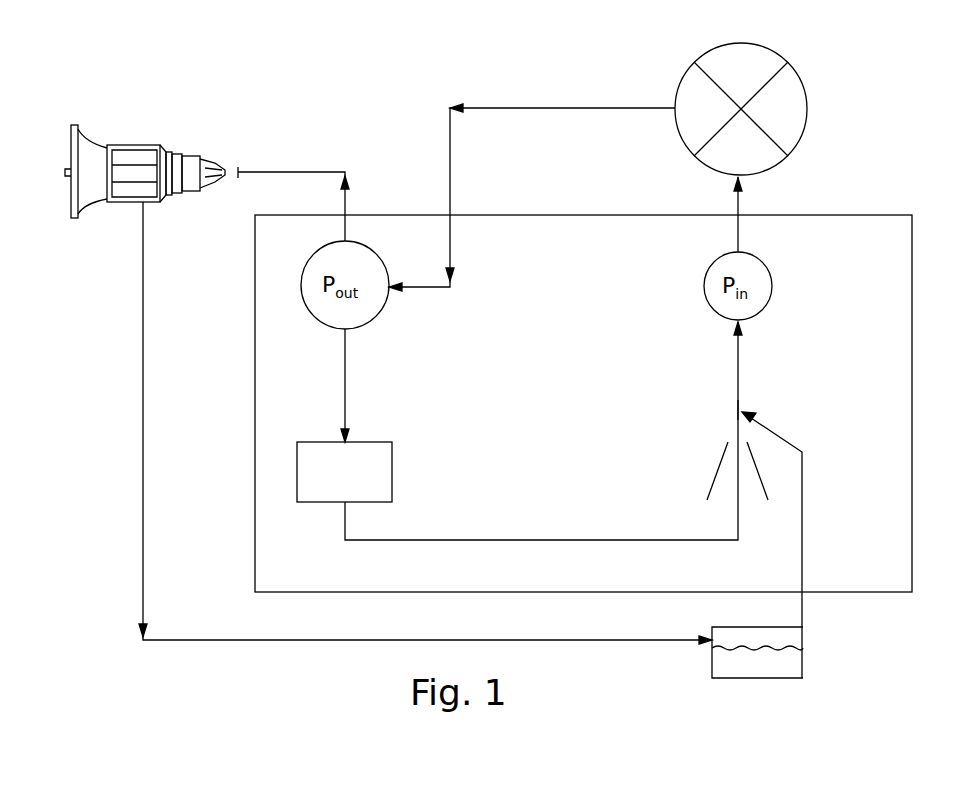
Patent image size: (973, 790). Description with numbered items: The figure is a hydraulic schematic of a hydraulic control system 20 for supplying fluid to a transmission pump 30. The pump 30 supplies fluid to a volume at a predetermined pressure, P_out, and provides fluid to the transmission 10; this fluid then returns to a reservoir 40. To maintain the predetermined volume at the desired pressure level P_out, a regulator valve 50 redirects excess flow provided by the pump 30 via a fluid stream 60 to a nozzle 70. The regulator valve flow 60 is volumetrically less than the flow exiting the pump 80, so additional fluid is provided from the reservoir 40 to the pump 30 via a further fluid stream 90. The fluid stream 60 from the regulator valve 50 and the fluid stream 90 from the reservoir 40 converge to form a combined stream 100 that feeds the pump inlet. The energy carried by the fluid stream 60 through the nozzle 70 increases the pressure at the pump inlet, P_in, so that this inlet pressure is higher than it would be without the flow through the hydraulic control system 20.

The transmission 10 is at (165, 143).
The hydraulic control system 20 is at (912, 338).
The transmission pump 30 is at (803, 72).
The reservoir 40 is at (805, 648).
The regulator valve 50 is at (344, 472).
The fluid stream 60 is at (530, 538).
The nozzle 70 is at (722, 461).
The flow exiting the pump 80 is at (515, 107).
The fluid stream 90 is at (803, 513).
The stream 100 is at (750, 368).